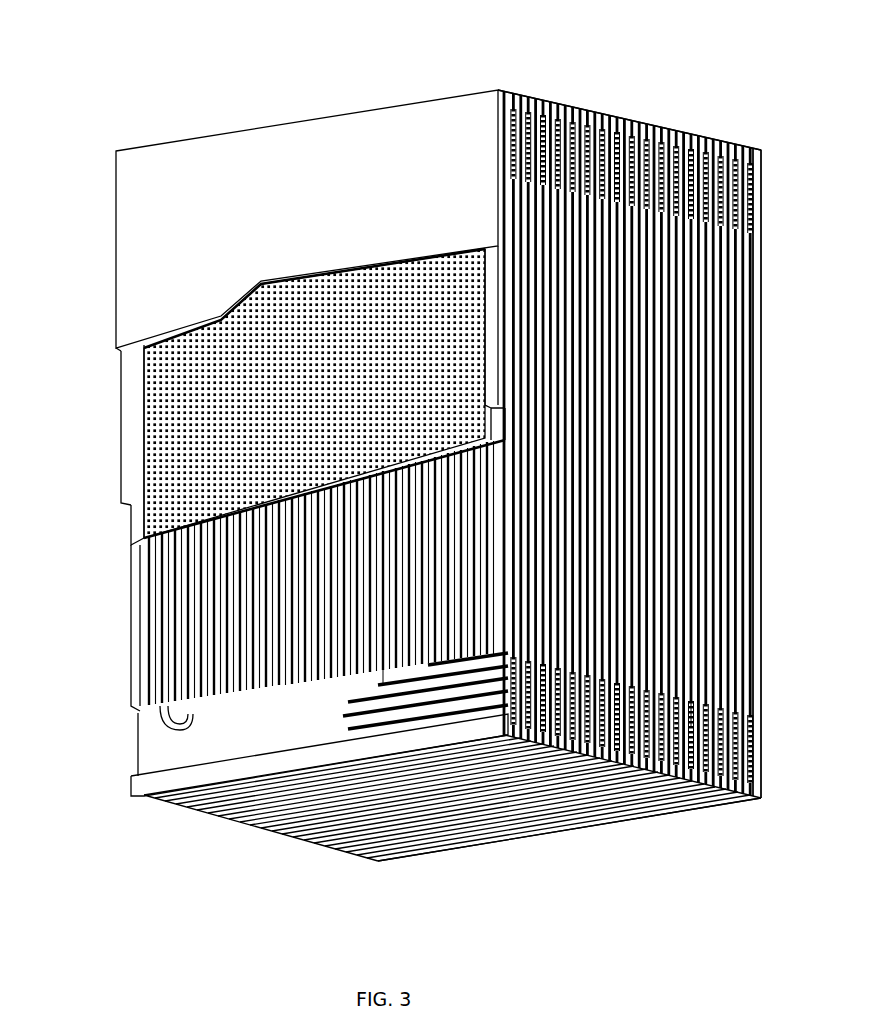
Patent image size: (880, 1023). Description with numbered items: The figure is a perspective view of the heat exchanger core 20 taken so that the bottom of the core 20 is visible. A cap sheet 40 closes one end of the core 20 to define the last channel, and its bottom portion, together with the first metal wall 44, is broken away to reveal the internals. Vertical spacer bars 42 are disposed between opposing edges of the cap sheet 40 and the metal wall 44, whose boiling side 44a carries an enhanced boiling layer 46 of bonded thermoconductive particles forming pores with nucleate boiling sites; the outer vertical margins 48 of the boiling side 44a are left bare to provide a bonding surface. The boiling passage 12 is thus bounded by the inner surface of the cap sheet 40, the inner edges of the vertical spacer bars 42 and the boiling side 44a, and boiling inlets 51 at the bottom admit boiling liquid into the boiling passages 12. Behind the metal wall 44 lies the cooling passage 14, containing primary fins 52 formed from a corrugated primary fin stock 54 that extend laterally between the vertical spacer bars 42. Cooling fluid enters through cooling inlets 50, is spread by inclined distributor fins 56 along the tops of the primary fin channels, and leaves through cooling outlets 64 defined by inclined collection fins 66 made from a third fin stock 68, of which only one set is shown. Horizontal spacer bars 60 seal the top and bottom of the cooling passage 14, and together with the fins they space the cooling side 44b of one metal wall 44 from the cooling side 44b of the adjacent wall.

The boiling passage 12 is at (205, 412).
The cooling passage 14 is at (170, 612).
The core 20 is at (768, 558).
The cap sheet 40 is at (790, 345).
The vertical spacer bars 42 is at (490, 450).
The metal wall 44 is at (170, 438).
The boiling side 44a is at (205, 378).
The cooling side 44b is at (165, 745).
The enhanced boiling layer 46 is at (314, 393).
The outer vertical margins 48 is at (122, 512).
The cooling inlets 50 is at (740, 215).
The boiling inlets 51 is at (575, 813).
The primary fins 52 is at (165, 722).
The primary fin stock 54 is at (210, 580).
The distributor fins 56 is at (710, 152).
The horizontal spacer bars 60 is at (553, 108).
The cooling outlets 64 is at (710, 706).
The collection fins 66 is at (400, 690).
The third fin stock 68 is at (385, 672).